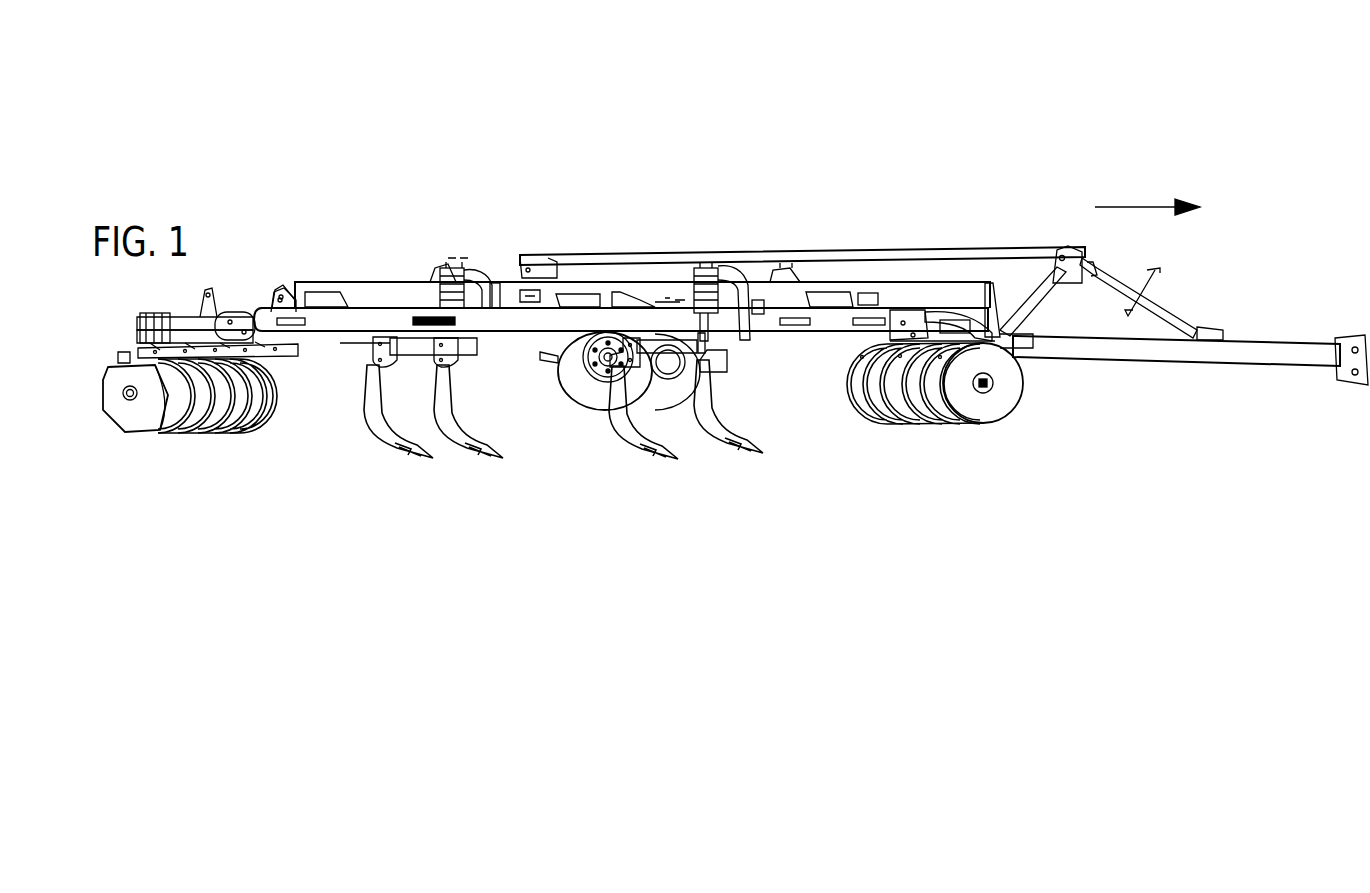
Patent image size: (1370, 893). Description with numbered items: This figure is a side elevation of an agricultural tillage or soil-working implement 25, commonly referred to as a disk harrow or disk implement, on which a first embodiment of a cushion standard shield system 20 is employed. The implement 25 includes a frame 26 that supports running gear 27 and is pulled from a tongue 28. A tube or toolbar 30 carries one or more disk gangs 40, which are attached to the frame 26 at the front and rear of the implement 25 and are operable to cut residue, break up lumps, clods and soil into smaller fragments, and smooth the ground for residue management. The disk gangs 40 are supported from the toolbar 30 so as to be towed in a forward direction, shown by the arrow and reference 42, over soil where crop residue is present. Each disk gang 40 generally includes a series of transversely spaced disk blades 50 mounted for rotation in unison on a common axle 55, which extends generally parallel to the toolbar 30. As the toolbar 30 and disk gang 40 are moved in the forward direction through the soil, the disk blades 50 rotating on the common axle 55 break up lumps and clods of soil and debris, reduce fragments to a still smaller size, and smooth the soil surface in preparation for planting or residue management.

The cushion standard shield system 20 is at (178, 418).
The agricultural implement 25 is at (975, 146).
The frame 26 is at (386, 316).
The running gear 27 is at (590, 404).
The tongue 28 is at (1141, 355).
The toolbar 30 is at (128, 322).
The disk gang 40 is at (263, 434).
The forward direction 42 is at (1118, 207).
The disk blade 50 is at (163, 412).
The common axle 55 is at (122, 394).